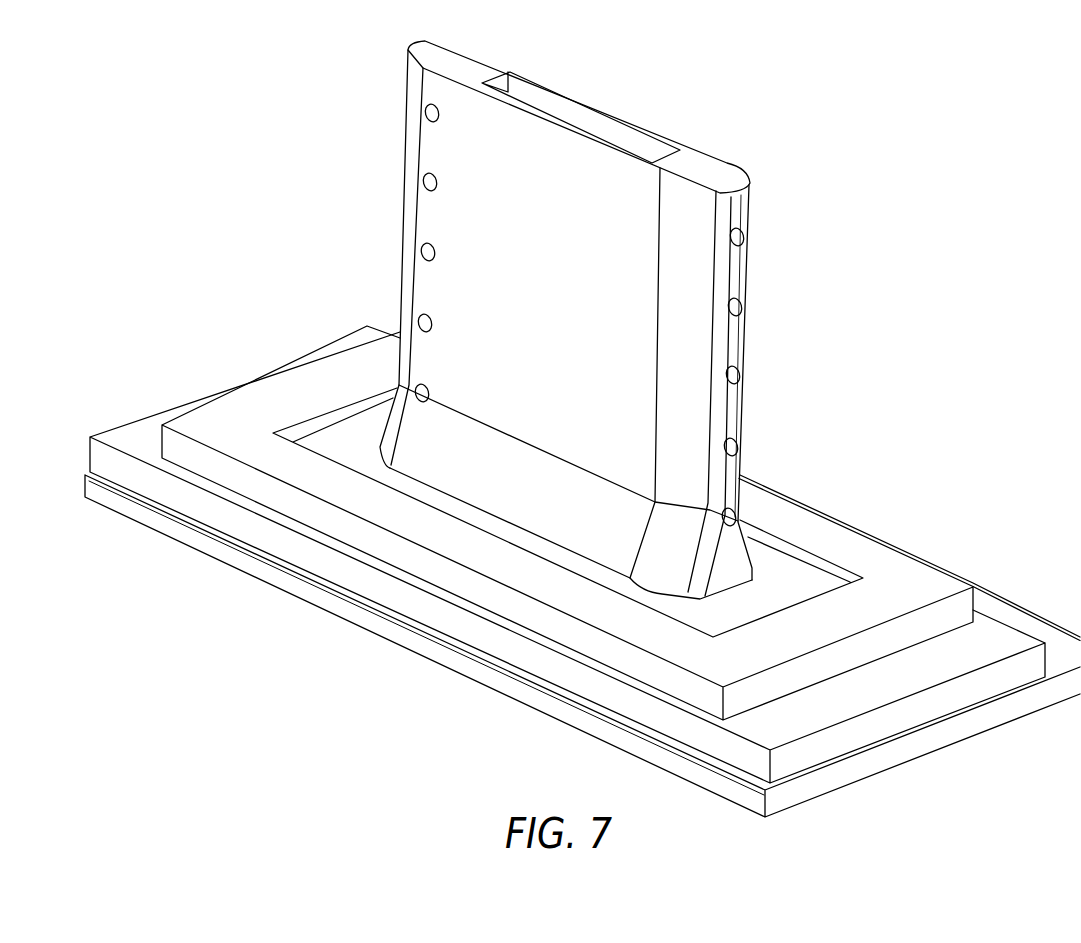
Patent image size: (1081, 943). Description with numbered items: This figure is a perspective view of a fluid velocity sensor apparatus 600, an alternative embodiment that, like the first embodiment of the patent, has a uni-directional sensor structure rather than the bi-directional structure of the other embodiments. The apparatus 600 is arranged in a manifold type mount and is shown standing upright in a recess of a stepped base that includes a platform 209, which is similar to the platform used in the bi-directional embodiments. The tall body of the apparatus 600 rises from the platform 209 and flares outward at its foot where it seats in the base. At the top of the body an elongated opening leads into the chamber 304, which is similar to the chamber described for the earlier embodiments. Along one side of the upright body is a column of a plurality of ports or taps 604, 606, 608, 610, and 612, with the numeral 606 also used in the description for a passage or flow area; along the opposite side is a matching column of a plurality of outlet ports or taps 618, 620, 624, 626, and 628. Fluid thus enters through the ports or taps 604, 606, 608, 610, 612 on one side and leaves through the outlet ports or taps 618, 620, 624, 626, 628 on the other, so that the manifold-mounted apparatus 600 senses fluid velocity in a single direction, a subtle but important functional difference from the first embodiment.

The platform 209 is at (955, 547).
The fluid velocity sensor apparatus 600 is at (776, 76).
The chamber 304 is at (588, 114).
The port or tap 604 is at (744, 236).
The port or tap 606 is at (742, 306).
The port or tap 608 is at (740, 374).
The port or tap 610 is at (738, 446).
The port or tap 612 is at (736, 517).
The outlet port or tap 618 is at (426, 113).
The outlet port or tap 620 is at (424, 182).
The outlet port or tap 624 is at (422, 252).
The outlet port or tap 626 is at (419, 323).
The outlet port or tap 628 is at (416, 393).